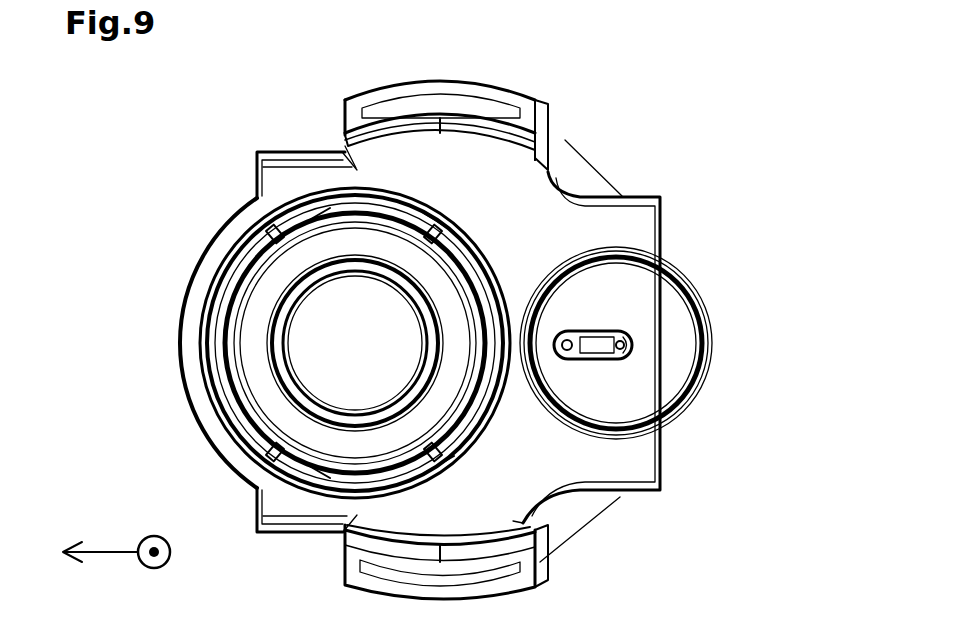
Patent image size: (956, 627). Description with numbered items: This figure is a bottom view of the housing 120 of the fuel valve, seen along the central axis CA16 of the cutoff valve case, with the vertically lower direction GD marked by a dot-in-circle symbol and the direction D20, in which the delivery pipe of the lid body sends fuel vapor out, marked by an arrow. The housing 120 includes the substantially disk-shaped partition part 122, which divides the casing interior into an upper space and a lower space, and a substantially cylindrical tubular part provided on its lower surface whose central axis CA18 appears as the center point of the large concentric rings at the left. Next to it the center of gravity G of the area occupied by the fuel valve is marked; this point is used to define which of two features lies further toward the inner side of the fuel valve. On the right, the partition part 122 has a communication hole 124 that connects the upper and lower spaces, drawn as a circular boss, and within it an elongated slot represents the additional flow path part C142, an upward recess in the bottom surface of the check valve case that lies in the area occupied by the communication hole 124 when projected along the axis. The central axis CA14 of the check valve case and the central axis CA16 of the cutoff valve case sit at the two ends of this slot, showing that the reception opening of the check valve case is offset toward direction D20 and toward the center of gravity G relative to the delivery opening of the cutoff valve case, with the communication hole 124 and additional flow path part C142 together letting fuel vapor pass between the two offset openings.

The housing 120 is at (655, 545).
The partition part 122 is at (628, 238).
The communication hole 124 is at (590, 330).
The additional flow path part C142 is at (602, 358).
The central axis of the check valve case CA14 is at (565, 337).
The central axis of the cutoff valve case CA16 is at (630, 343).
The central axis of the tubular part CA18 is at (355, 343).
The center of gravity G is at (458, 343).
The vertically lower direction GD is at (151, 536).
The direction D20 is at (90, 536).